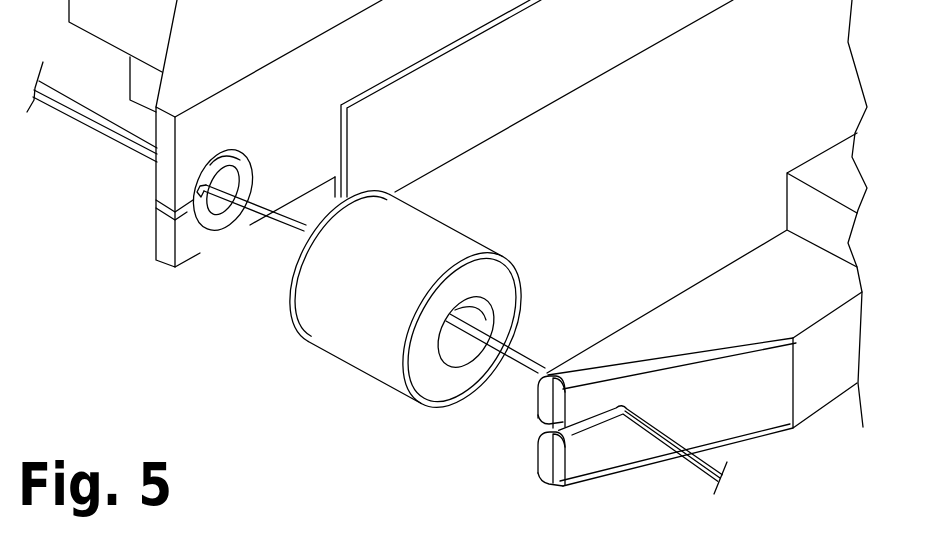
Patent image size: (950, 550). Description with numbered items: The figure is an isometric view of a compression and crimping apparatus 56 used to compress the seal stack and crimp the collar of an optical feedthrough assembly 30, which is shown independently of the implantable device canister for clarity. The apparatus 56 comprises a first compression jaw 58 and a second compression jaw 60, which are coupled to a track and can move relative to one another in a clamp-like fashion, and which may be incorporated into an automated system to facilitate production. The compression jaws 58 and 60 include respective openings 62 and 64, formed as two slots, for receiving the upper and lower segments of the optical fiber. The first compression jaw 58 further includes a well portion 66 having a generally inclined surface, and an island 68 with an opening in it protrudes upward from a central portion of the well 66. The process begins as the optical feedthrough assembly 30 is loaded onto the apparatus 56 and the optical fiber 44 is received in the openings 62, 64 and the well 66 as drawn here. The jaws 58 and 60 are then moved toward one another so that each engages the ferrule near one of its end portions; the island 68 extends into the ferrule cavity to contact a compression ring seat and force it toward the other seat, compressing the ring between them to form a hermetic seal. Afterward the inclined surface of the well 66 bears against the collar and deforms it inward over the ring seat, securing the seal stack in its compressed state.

The optical feedthrough assembly 30 is at (410, 247).
The optical fiber 44 is at (530, 363).
The compression and crimping apparatus 56 is at (308, 376).
The first compression jaw 58 is at (157, 227).
The second compression jaw 60 is at (634, 473).
The opening 62 is at (157, 200).
The opening 64 is at (538, 428).
The well portion 66 is at (223, 217).
The island 68 is at (240, 173).